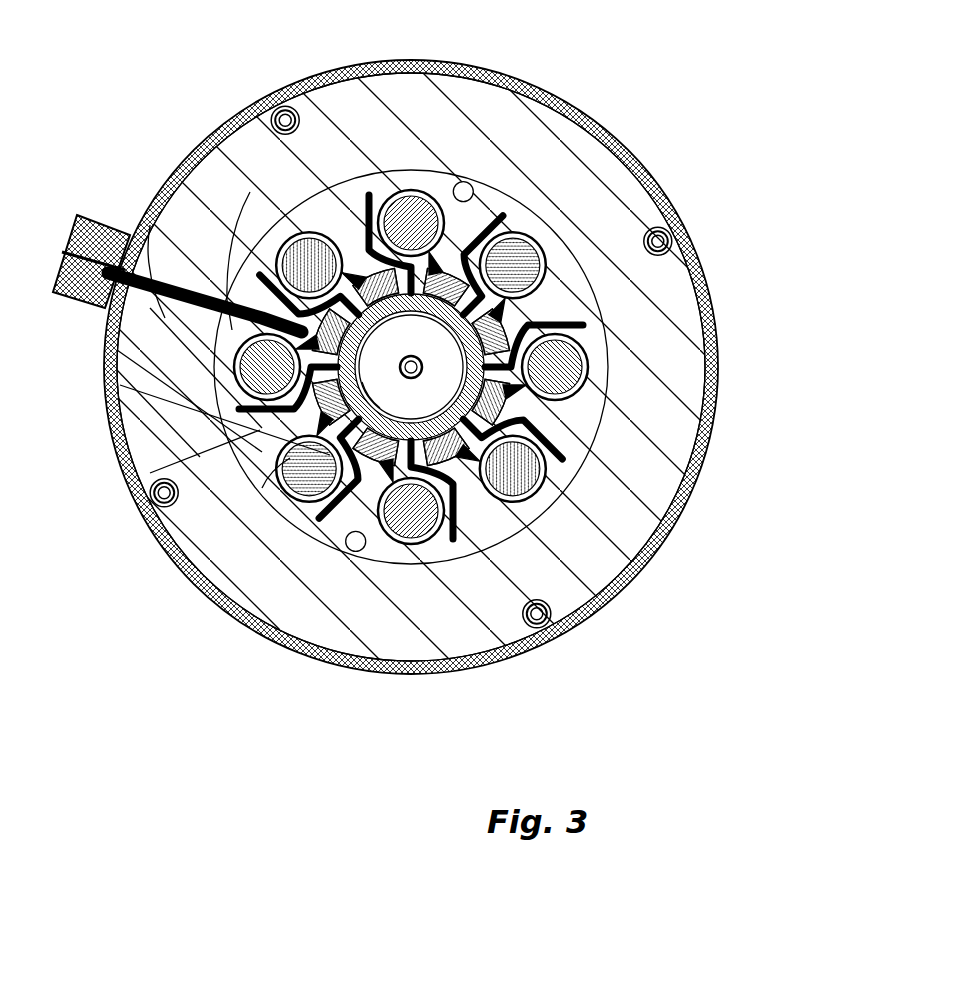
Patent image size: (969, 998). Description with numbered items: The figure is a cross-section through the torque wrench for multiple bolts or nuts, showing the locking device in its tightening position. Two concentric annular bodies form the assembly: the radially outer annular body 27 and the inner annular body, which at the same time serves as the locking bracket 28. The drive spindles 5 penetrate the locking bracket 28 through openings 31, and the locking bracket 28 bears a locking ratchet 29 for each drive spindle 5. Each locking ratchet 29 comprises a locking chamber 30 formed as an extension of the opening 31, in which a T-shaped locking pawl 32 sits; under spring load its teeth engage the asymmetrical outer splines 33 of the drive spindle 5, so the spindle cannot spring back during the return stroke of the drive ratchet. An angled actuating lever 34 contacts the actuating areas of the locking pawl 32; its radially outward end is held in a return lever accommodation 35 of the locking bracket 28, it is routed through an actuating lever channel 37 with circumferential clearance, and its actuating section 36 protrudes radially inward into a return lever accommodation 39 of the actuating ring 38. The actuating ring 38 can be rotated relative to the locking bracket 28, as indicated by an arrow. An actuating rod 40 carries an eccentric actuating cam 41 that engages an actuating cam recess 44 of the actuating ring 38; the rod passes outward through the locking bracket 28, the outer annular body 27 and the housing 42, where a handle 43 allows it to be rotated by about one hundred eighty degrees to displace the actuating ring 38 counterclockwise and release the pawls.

The drive spindle 5 is at (261, 372).
The outer annular body 27 is at (184, 237).
The locking bracket 28 is at (329, 225).
The locking ratchet 29 is at (152, 497).
The locking chamber 30 is at (183, 466).
The opening 31 is at (227, 320).
The locking pawl 32 is at (150, 473).
The outer splines 33 is at (244, 251).
The actuating lever 34 is at (117, 350).
The return lever accommodation 35 is at (210, 417).
The actuating section 36 is at (399, 368).
The actuating lever channel 37 is at (262, 488).
The actuating ring 38 is at (445, 290).
The return lever accommodation 39 is at (372, 380).
The actuating rod 40 is at (147, 275).
The actuating cam 41 is at (373, 343).
The housing 42 is at (256, 102).
The handle 43 is at (95, 213).
The actuating cam recess 44 is at (404, 322).